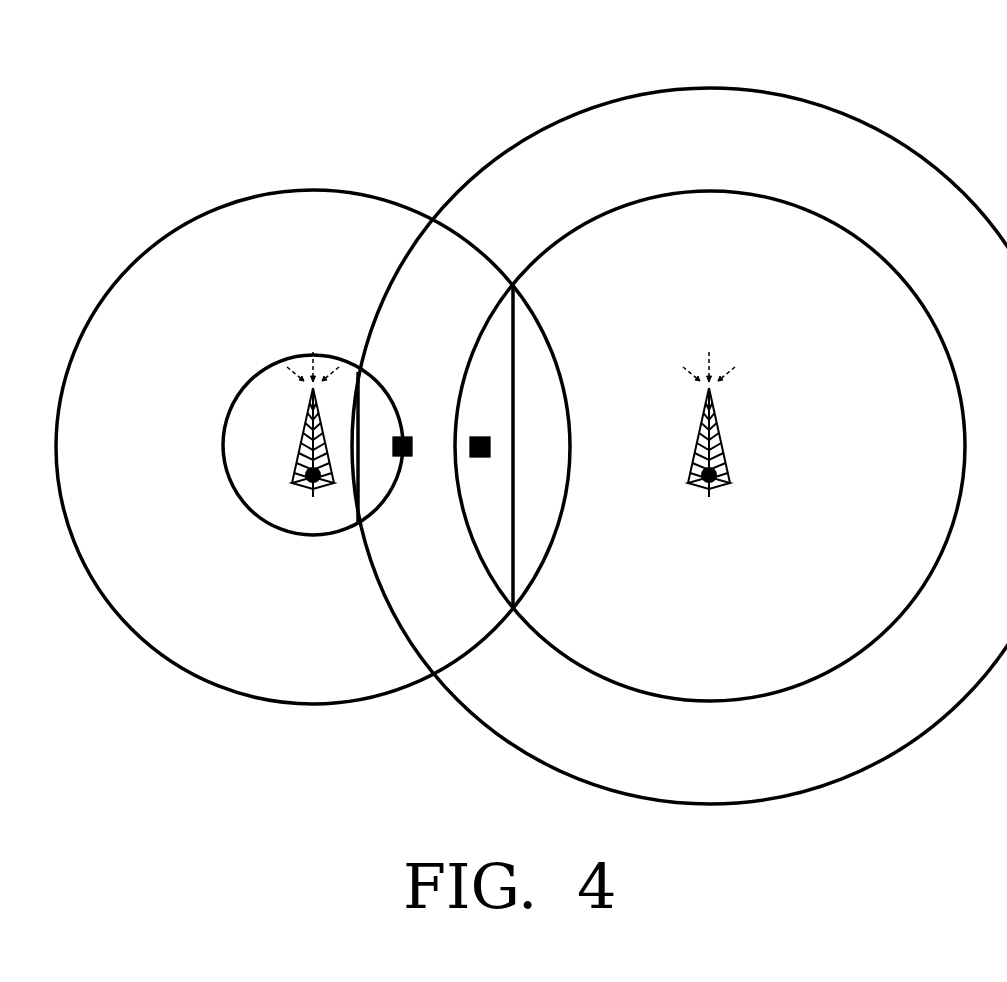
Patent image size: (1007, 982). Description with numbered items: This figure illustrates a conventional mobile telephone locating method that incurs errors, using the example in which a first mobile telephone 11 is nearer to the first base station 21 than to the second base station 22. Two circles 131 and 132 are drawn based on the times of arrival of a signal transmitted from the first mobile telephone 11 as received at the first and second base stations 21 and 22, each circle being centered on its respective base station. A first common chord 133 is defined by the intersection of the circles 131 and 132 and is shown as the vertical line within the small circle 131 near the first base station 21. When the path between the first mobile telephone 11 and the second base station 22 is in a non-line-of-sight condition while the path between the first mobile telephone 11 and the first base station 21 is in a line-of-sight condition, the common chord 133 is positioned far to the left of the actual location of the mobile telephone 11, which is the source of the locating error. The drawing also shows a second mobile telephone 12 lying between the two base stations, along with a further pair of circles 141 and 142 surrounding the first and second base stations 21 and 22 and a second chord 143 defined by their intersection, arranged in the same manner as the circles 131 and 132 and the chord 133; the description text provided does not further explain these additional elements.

The first mobile telephone 11 is at (407, 437).
The second mobile station 12 is at (490, 447).
The first base station 21 is at (313, 497).
The second base station 22 is at (715, 488).
The first circle 131 is at (268, 368).
The second circle 132 is at (842, 104).
The first common chord 133 is at (362, 500).
The coverage area of first base station 141 is at (222, 205).
The inner coverage area of second base station 142 is at (880, 254).
The boundary line in second cell 143 is at (516, 533).